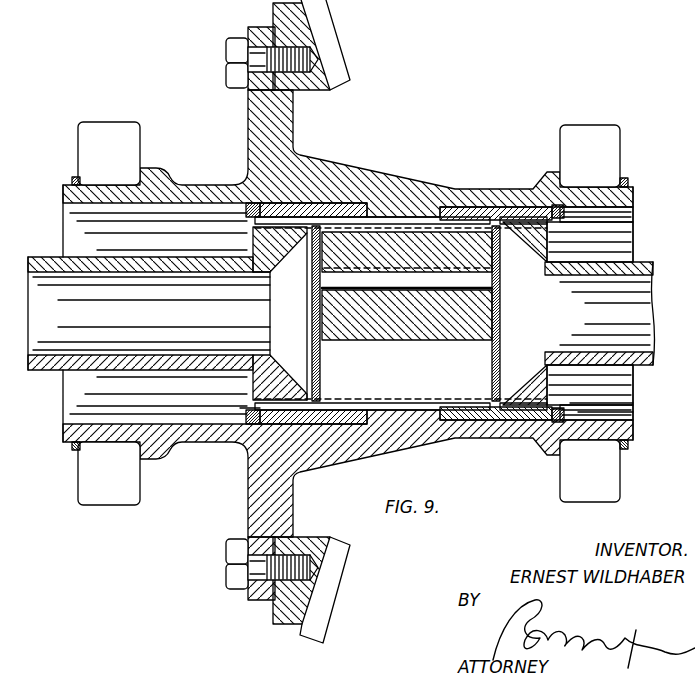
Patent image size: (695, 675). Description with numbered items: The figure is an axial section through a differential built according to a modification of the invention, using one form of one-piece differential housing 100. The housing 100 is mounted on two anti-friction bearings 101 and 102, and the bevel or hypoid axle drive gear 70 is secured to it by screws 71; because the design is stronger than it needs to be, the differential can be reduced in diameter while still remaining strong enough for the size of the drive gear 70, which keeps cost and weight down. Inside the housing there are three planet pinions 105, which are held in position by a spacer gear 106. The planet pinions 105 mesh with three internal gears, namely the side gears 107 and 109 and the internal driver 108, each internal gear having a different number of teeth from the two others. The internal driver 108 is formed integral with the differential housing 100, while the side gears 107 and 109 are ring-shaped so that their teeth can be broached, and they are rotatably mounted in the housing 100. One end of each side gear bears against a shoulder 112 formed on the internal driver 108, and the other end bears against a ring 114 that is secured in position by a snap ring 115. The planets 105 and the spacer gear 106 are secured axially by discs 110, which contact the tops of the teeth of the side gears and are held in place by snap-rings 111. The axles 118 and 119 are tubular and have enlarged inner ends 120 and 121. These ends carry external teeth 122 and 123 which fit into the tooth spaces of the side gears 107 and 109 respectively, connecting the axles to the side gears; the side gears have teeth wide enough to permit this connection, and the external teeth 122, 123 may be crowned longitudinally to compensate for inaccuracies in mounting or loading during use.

The axle drive gear 70 is at (328, 30).
The screws 71 is at (227, 51).
The differential housing 100 is at (430, 195).
The anti-friction bearing 101 is at (130, 142).
The anti-friction bearing 102 is at (608, 153).
The planet pinions 105 is at (488, 262).
The spacer gear 106 is at (407, 347).
The side gear 107 is at (331, 210).
The internal driver 108 is at (388, 222).
The side gear 109 is at (487, 210).
The discs 110 is at (321, 367).
The snap-rings 111 is at (300, 250).
The shoulder 112 is at (362, 426).
The ring 114 is at (252, 398).
The snap ring 115 is at (245, 412).
The axle 118 is at (130, 362).
The axle 119 is at (642, 262).
The enlarged inner end 120 is at (275, 243).
The enlarged inner end 121 is at (548, 248).
The external teeth 122 is at (262, 221).
The external teeth 123 is at (517, 226).